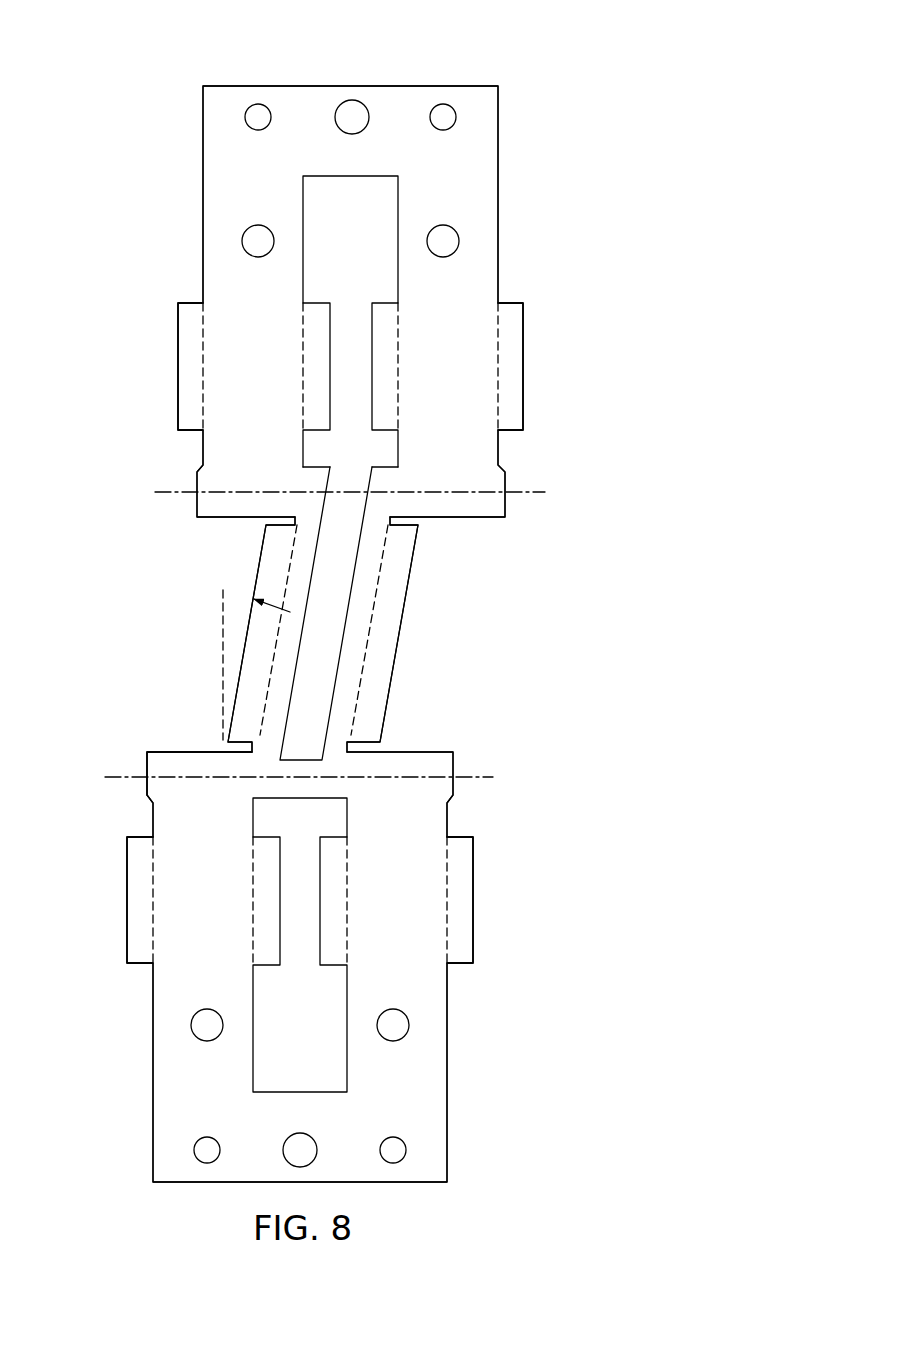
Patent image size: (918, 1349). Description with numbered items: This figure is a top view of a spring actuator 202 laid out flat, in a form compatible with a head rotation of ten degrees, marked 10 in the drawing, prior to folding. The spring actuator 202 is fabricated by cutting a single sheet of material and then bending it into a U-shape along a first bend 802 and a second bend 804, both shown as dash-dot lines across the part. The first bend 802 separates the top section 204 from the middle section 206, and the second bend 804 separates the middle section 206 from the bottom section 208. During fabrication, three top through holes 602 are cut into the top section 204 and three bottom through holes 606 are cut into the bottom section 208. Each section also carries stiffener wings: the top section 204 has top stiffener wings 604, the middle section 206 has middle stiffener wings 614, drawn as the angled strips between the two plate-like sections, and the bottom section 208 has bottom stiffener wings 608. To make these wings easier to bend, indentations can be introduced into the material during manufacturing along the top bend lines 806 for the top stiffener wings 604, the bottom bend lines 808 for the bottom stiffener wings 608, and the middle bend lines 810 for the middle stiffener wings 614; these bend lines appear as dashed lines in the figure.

The spring actuator 202 is at (155, 55).
The top section 204 is at (483, 155).
The middle section 206 is at (162, 763).
The bottom section 208 is at (422, 1087).
The top through holes 602 is at (352, 134).
The top stiffener wings 604 is at (383, 324).
The bottom through holes 606 is at (288, 1138).
The bottom stiffener wings 608 is at (330, 866).
The middle stiffener wings 614 is at (270, 545).
The first bend 802 is at (532, 492).
The second bend 804 is at (467, 777).
The top bend lines 806 is at (303, 382).
The bottom bend lines 808 is at (252, 922).
The middle bend lines 810 is at (260, 698).
The bend angle 10 is at (223, 598).